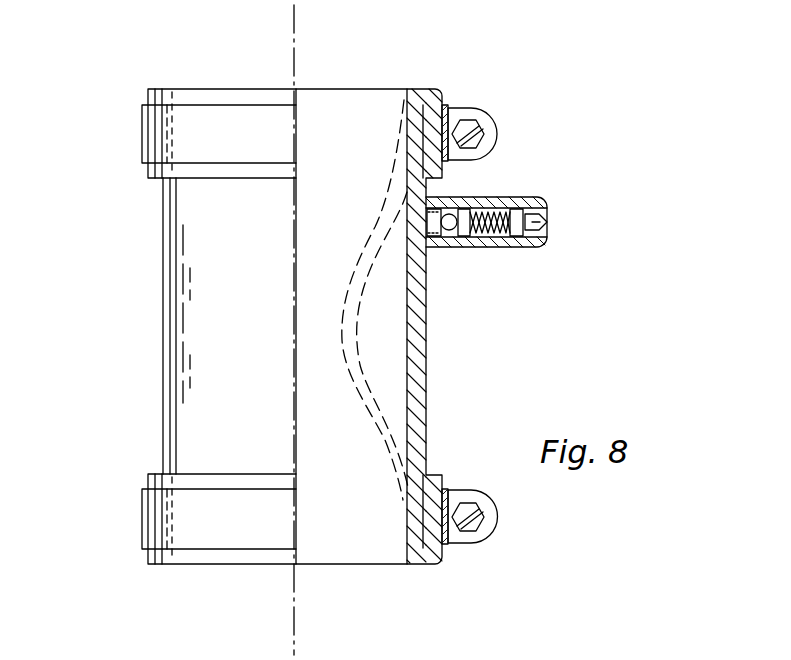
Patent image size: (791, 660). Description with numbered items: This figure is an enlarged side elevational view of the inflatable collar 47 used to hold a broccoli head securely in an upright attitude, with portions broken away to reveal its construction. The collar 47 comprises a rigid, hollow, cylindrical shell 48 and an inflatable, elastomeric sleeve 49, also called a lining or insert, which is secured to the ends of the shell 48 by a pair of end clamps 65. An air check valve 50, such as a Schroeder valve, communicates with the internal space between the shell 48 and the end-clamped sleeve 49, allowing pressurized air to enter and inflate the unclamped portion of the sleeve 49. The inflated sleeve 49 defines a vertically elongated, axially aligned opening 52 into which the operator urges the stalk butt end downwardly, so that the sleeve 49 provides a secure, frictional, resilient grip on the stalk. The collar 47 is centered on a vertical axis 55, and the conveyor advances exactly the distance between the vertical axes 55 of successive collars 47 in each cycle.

The collar 47 is at (490, 319).
The cylindrical shell 48 is at (427, 406).
The inflatable elastomeric sleeve 49 is at (406, 203).
The air check valve 50 is at (487, 197).
The opening 52 is at (363, 112).
The vertical axis 55 is at (294, 50).
The end clamps 65 is at (142, 122).